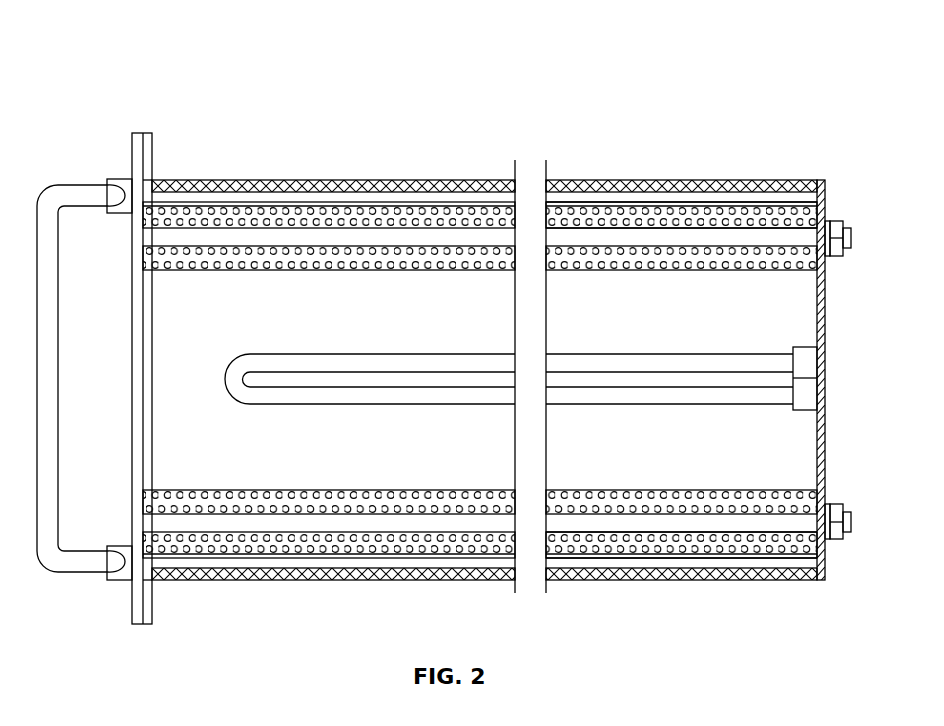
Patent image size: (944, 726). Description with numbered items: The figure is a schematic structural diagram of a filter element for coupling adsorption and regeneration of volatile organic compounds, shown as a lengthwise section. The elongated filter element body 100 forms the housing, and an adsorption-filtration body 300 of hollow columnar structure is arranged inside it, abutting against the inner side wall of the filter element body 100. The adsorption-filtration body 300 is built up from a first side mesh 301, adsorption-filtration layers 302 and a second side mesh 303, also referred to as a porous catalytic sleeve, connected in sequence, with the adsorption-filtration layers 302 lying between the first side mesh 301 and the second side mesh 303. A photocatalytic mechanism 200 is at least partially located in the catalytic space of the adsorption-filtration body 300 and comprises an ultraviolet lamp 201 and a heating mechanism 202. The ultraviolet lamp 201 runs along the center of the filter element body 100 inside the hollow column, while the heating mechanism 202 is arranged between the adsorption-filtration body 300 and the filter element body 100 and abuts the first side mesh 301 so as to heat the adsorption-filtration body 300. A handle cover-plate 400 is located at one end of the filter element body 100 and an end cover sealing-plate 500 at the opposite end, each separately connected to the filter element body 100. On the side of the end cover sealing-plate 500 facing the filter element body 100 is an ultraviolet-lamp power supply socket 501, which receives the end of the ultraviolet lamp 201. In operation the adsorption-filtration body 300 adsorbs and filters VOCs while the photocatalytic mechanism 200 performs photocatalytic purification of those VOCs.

The filter element body 100 is at (339, 336).
The photocatalytic mechanism 200 is at (521, 284).
The ultraviolet lamp 201 is at (509, 226).
The heating mechanism 202 is at (672, 303).
The adsorption-filtration body 300 is at (480, 295).
The first side mesh 301 is at (484, 314).
The adsorption-filtration layers 302 is at (480, 303).
The second side mesh 303 is at (480, 281).
The handle cover-plate 400 is at (88, 314).
The end cover sealing-plate 500 is at (832, 314).
The ultraviolet-lamp power supply socket 501 is at (771, 229).